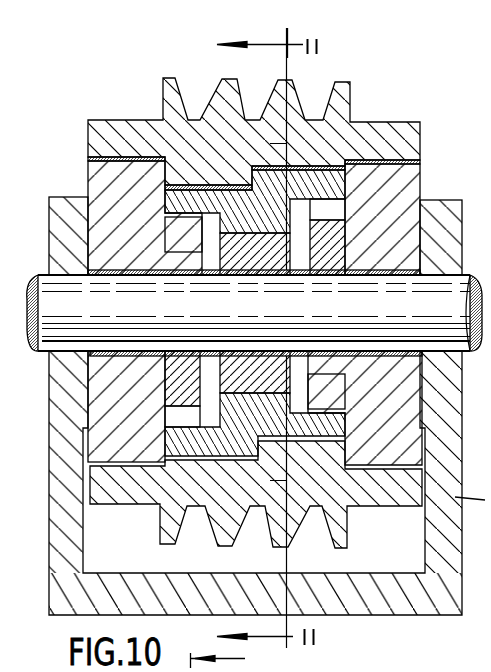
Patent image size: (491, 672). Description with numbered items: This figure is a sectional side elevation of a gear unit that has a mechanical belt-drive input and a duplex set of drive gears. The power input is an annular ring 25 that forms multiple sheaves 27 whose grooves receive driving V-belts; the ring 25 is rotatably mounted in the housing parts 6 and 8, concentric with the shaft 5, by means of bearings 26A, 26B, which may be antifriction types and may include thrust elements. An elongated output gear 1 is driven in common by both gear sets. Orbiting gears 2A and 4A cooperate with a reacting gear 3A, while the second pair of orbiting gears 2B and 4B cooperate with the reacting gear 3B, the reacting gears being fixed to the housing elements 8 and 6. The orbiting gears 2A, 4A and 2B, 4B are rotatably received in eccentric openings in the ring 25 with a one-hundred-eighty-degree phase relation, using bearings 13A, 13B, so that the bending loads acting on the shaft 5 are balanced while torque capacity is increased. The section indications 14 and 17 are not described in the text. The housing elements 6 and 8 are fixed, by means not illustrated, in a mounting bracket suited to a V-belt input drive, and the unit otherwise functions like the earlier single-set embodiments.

The output gear 1 is at (248, 367).
The orbiting gear 2A is at (254, 173).
The orbiting gear 2B is at (254, 174).
The reacting gear 3A is at (175, 368).
The reacting gear 3B is at (313, 370).
The orbiting gear 4A is at (165, 200).
The orbiting gear 4B is at (335, 183).
The shaft 5 is at (455, 324).
The housing element 6 is at (397, 200).
The housing element 8 is at (88, 182).
The bearing 13A is at (164, 82).
The bearing 13B is at (317, 166).
The section line 14 is at (229, 661).
The section line 17 is at (302, 669).
The annular ring 25 is at (272, 173).
The bearing 26A is at (88, 158).
The bearing 26B is at (421, 163).
The sheave 27 is at (345, 110).